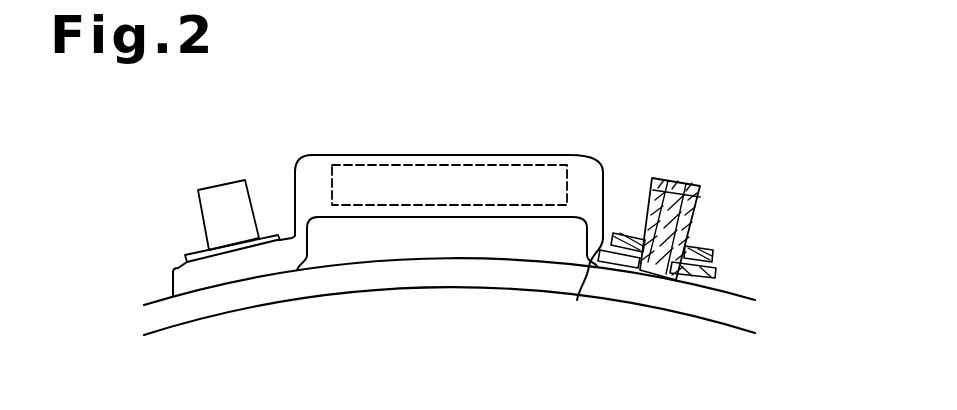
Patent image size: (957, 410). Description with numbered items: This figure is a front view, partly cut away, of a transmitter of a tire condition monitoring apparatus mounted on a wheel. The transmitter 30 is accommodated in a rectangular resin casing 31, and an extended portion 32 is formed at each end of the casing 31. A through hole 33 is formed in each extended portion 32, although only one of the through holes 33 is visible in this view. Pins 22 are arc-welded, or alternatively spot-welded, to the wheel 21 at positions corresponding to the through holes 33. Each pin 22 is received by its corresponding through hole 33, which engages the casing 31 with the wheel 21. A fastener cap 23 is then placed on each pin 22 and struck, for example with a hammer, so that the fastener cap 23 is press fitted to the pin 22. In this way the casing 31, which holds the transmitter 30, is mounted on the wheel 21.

The wheel 21 is at (693, 308).
The pin 22 is at (672, 208).
The fastener cap 23 is at (679, 178).
The transmitter 30 is at (375, 164).
The casing 31 is at (517, 155).
The extended portion 32 is at (183, 270).
The through hole 33 is at (727, 282).